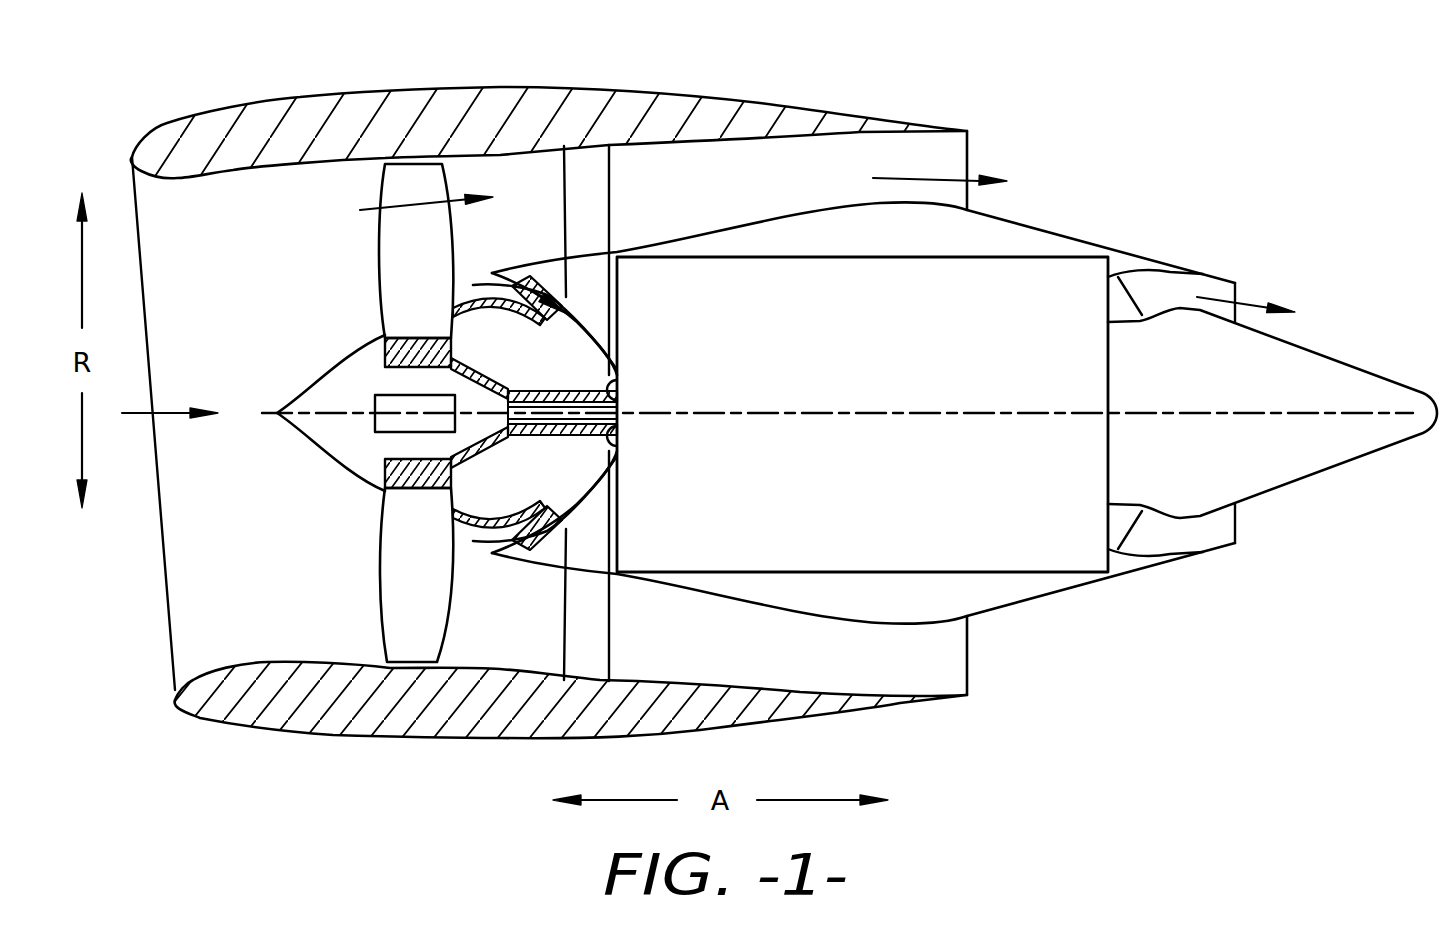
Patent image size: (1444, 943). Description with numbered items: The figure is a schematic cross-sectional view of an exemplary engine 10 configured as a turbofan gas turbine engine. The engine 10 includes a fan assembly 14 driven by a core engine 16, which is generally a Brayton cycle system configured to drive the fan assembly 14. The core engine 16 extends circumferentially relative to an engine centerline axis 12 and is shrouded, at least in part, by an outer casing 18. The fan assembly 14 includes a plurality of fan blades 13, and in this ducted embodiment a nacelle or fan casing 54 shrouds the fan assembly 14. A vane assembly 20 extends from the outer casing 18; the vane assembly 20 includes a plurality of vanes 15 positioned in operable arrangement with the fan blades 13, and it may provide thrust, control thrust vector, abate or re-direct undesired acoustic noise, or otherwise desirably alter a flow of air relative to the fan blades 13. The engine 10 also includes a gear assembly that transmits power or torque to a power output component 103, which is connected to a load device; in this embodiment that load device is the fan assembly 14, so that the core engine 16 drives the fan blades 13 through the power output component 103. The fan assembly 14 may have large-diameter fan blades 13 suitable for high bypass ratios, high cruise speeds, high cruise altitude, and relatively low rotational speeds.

The engine 10 is at (1176, 177).
The engine centerline axis 12 is at (1168, 413).
The fan blades 13 is at (378, 605).
The fan assembly 14 is at (467, 73).
The vanes 15 is at (610, 173).
The core engine 16 is at (843, 426).
The outer casing 18 is at (808, 612).
The vane assembly 20 is at (628, 597).
The nacelle or fan casing 54 is at (452, 737).
The power output component 103 is at (567, 392).